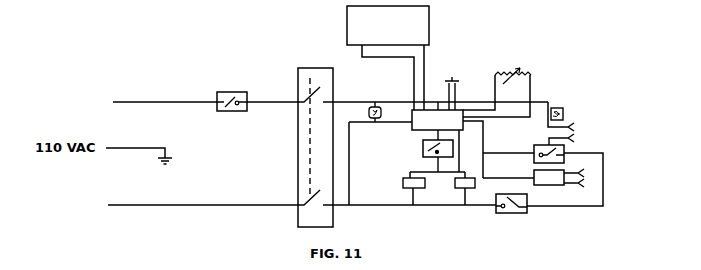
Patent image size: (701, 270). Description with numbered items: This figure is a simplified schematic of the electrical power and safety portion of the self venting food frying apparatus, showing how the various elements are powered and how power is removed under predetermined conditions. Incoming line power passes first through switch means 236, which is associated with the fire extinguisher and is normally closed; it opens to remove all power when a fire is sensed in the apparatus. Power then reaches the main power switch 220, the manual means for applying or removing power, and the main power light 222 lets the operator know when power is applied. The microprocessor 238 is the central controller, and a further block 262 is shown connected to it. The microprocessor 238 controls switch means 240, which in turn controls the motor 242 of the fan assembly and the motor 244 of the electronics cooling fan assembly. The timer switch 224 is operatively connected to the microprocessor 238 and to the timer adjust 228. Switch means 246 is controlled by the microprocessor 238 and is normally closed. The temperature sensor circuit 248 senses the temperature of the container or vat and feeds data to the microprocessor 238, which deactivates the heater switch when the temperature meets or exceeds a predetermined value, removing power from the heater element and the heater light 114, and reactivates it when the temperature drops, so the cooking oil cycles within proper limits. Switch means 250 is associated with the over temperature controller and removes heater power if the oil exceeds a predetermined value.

The heater light 114 is at (577, 116).
The main power switch 220 is at (315, 137).
The main power light 222 is at (371, 102).
The timer switch 224 is at (451, 84).
The timer adjust 228 is at (497, 81).
The switch means 236 is at (232, 90).
The microprocessor 238 is at (437, 116).
The switch means 240 is at (416, 151).
The motor 242 is at (380, 163).
The motor 244 is at (439, 167).
The switch means 246 is at (536, 154).
The temperature sensor circuit 248 is at (531, 201).
The switch means 250 is at (548, 197).
The control unit 262 is at (388, 58).